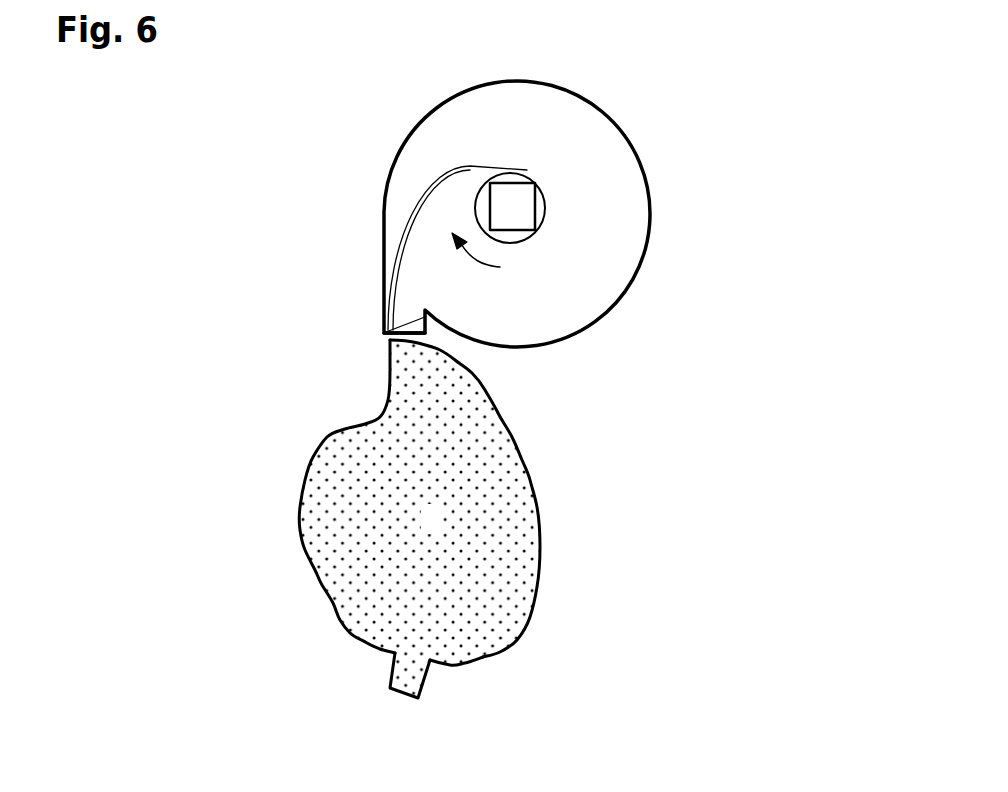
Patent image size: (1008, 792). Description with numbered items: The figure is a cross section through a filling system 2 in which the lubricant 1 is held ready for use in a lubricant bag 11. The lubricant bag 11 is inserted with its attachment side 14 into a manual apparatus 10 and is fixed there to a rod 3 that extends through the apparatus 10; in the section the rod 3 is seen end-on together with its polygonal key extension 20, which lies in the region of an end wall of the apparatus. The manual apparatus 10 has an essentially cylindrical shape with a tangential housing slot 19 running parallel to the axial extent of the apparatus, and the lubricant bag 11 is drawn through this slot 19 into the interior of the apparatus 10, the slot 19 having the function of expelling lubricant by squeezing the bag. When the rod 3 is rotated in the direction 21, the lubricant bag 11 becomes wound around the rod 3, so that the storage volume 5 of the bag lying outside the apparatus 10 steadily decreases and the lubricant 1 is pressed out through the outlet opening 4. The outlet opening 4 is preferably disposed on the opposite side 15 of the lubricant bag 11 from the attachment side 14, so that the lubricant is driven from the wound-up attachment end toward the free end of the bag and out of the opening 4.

The lubricant 1 is at (441, 531).
The airbag arrangement 2 is at (418, 527).
The rod 3 is at (633, 201).
The outlet opening 4 is at (397, 694).
The storage volume 5 is at (507, 587).
The manual apparatus 10 is at (640, 158).
The lubricant bag 11 is at (303, 552).
The attachment side 14 is at (533, 170).
The opposite side 15 is at (447, 662).
The housing slot 19 is at (388, 343).
The polygonal key extension 20 is at (518, 222).
The direction of rotation 21 is at (487, 268).